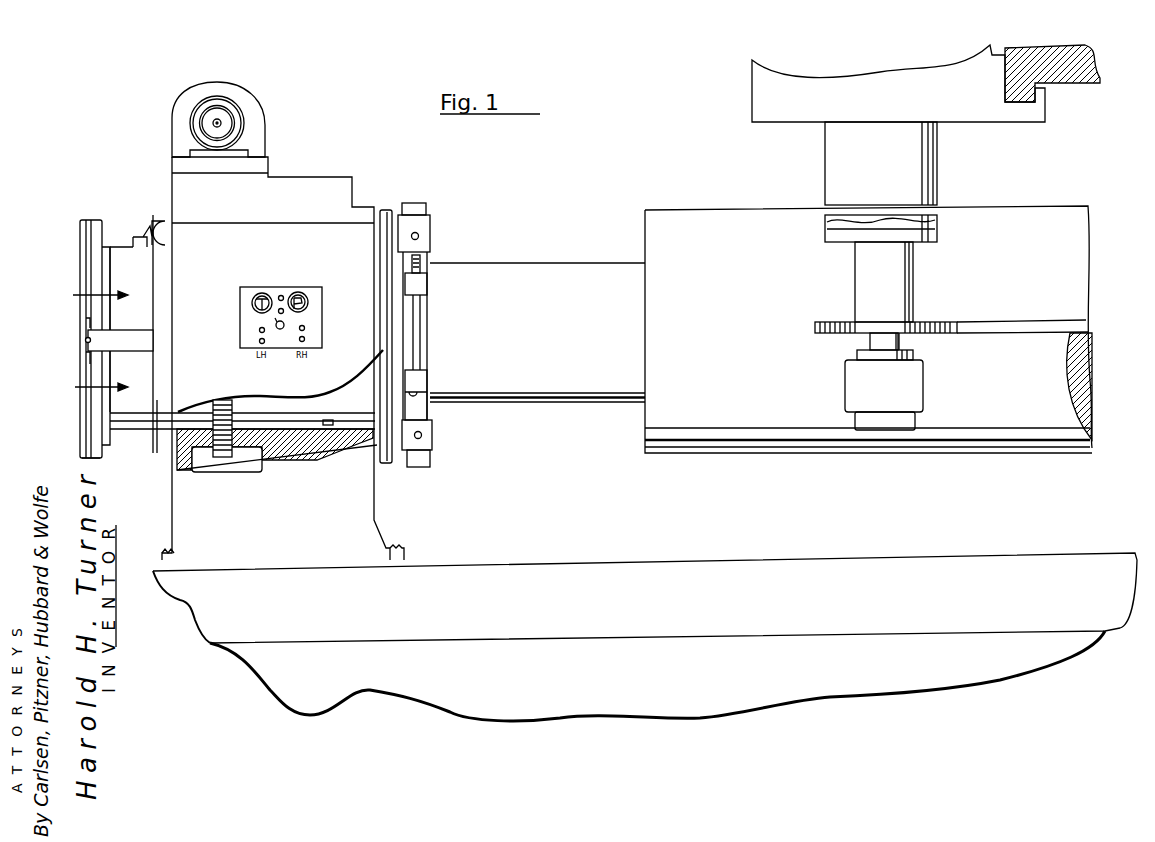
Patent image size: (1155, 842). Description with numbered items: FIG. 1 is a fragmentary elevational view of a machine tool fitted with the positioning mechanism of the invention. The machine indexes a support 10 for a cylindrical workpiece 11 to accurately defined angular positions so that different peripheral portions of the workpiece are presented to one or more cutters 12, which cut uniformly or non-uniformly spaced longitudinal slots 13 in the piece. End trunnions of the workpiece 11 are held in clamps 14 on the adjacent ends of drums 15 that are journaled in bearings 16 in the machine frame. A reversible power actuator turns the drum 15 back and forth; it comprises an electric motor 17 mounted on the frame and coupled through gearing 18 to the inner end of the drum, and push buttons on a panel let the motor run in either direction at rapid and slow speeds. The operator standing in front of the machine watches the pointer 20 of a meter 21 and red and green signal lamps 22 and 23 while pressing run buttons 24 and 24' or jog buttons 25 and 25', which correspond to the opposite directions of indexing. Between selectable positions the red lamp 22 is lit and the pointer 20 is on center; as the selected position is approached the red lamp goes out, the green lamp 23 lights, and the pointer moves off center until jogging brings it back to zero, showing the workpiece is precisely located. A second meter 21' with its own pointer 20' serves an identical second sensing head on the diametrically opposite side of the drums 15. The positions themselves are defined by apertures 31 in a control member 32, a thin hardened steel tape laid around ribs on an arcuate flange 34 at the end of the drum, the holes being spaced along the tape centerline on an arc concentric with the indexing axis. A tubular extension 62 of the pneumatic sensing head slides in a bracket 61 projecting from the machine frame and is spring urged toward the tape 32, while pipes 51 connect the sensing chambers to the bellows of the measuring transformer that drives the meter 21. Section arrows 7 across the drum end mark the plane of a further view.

The section line 7- 7 is at (107, 342).
The support 10 is at (431, 226).
The cylindrical workpiece 11 is at (731, 226).
The cutters 12 is at (806, 331).
The longitudinal slots 13 is at (1032, 322).
The clamps 14 is at (422, 285).
The drums 15 is at (140, 433).
The bearings 16 is at (340, 440).
The electric motor 17 is at (252, 113).
The gearing 18 is at (226, 455).
The pointer 20 is at (239, 299).
The pointer 20' is at (315, 289).
The meter 21 is at (245, 289).
The meter 21' is at (323, 299).
The red signal lamp 22 is at (282, 295).
The green signal lamp 23 is at (284, 312).
The run button 24 is at (326, 332).
The run button 24' is at (235, 328).
The jog button 25 is at (326, 348).
The jog button 25' is at (235, 345).
The apertures 31 is at (88, 272).
The control member 32 is at (84, 233).
The arcuate flange 34 is at (102, 448).
The pipes 51 is at (86, 326).
The bracket 61 is at (135, 334).
The tubular extension 62 is at (85, 340).